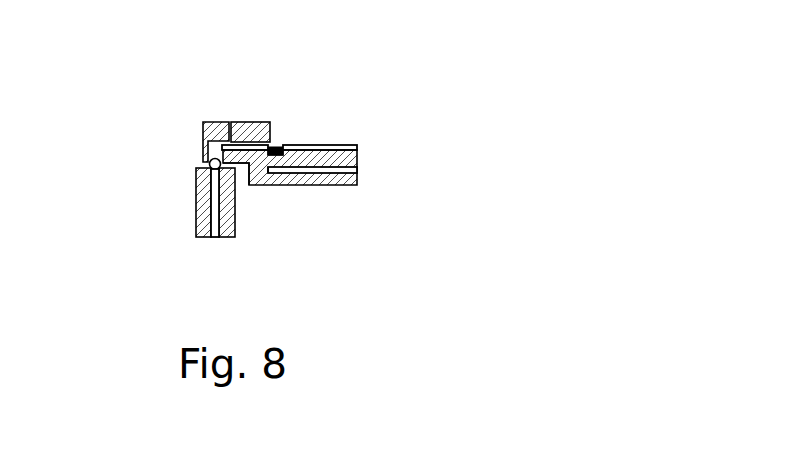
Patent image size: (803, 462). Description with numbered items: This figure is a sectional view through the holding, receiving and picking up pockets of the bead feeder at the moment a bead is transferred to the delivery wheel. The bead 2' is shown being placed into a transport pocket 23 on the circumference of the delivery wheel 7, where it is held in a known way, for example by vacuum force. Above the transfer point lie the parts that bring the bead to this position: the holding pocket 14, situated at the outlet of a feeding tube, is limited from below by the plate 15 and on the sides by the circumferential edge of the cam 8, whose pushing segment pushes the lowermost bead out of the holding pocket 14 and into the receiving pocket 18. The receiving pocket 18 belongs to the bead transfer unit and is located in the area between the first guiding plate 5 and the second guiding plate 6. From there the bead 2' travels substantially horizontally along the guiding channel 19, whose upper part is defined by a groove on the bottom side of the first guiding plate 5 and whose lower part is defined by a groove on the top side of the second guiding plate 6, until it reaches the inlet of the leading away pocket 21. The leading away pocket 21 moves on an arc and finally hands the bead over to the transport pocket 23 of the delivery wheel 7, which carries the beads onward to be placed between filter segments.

The first guiding plate 5 is at (253, 124).
The second guiding plate 6 is at (208, 125).
The cam 8 is at (343, 149).
The holding pocket 14 is at (295, 167).
The plate 15 is at (352, 155).
The receiving pocket 18 is at (268, 171).
The guiding channel 19 is at (238, 167).
The leading away pocket 21 is at (208, 157).
The bead 2' is at (144, 176).
The transport pocket 23 is at (197, 168).
The delivery wheel 7 is at (204, 208).